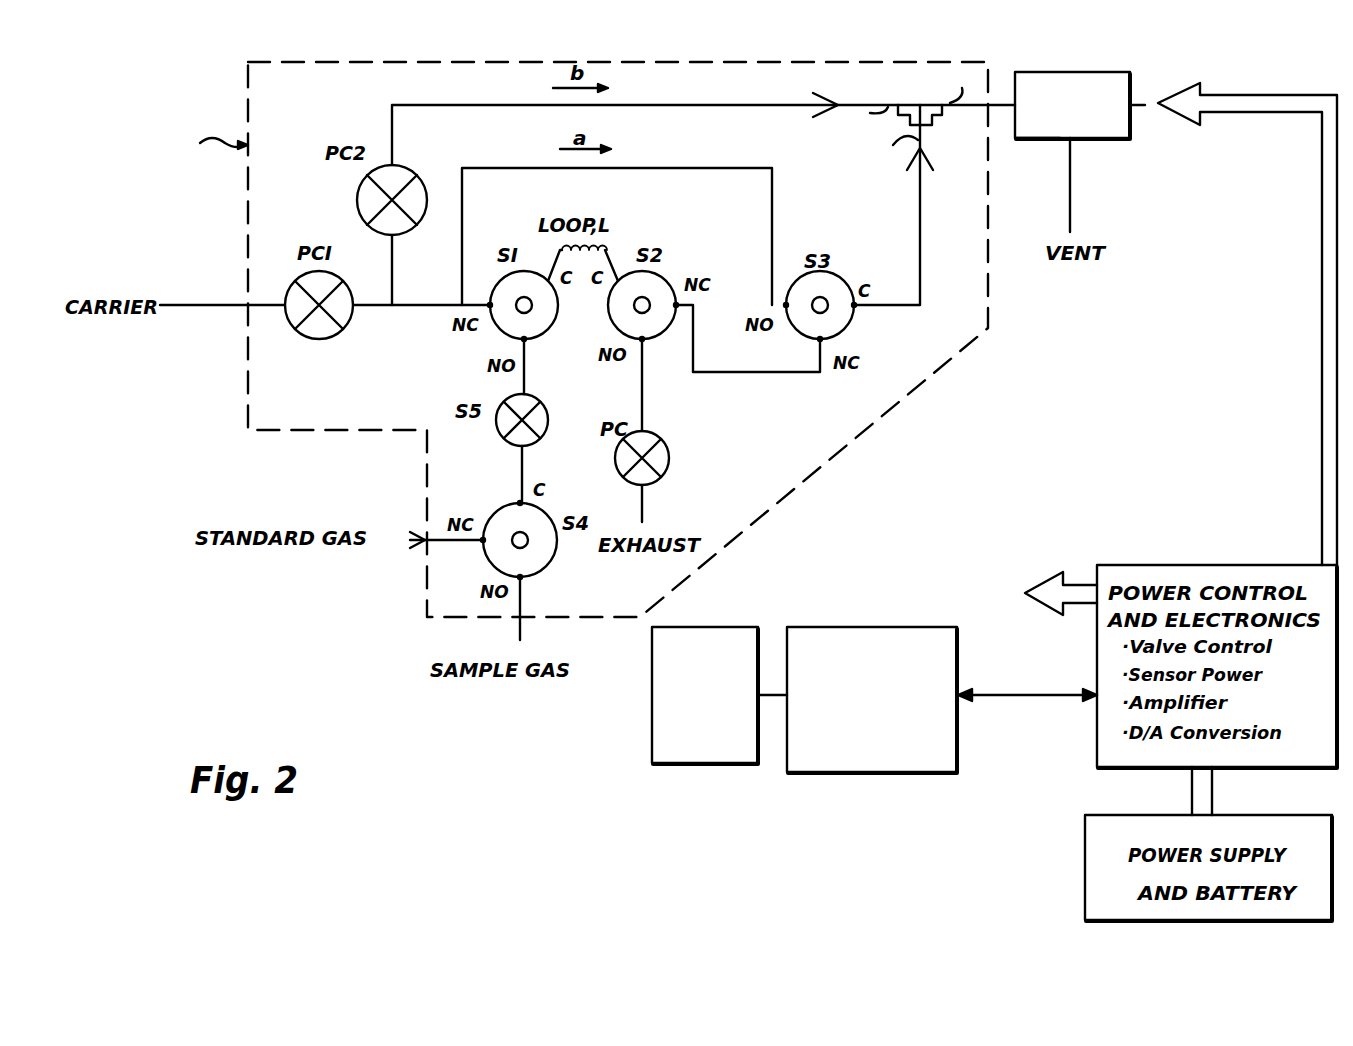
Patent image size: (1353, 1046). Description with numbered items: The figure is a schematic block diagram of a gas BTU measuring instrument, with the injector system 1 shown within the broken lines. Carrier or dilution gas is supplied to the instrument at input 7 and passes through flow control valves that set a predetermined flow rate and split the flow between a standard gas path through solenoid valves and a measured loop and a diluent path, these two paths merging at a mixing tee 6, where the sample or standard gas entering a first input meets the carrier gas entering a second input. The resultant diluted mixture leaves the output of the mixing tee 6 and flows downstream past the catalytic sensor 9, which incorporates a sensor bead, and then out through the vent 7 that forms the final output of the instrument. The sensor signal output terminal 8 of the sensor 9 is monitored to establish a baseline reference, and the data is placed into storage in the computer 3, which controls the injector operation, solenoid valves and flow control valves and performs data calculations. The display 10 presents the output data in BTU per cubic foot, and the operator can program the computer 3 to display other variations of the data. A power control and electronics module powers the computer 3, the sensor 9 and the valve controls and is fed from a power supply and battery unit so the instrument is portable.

The injector system 1 is at (248, 425).
The computer 3 is at (908, 625).
The mixing tee 6 is at (932, 125).
The input / vent 7 is at (181, 305).
The sensor signal output terminal 8 is at (1137, 92).
The sensor 9 is at (1040, 140).
The display 10 is at (652, 738).